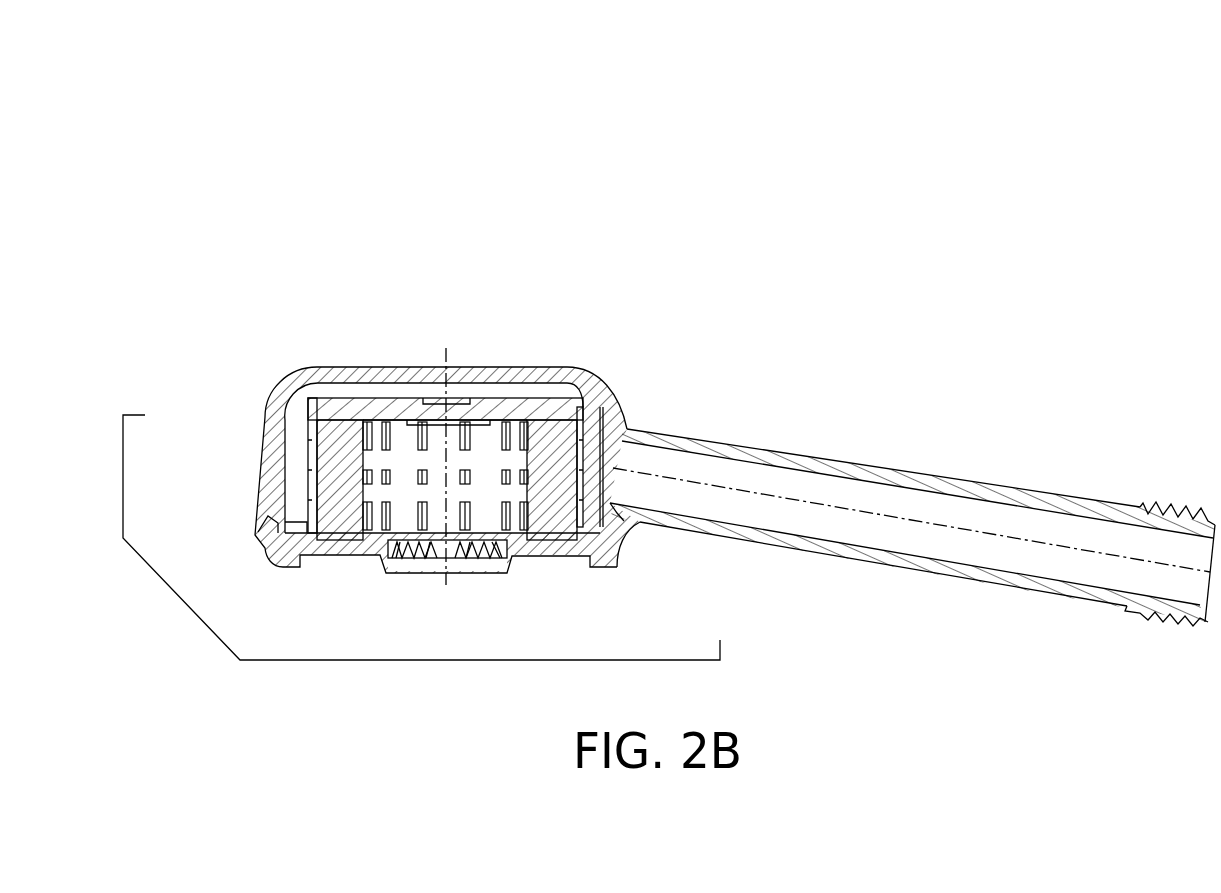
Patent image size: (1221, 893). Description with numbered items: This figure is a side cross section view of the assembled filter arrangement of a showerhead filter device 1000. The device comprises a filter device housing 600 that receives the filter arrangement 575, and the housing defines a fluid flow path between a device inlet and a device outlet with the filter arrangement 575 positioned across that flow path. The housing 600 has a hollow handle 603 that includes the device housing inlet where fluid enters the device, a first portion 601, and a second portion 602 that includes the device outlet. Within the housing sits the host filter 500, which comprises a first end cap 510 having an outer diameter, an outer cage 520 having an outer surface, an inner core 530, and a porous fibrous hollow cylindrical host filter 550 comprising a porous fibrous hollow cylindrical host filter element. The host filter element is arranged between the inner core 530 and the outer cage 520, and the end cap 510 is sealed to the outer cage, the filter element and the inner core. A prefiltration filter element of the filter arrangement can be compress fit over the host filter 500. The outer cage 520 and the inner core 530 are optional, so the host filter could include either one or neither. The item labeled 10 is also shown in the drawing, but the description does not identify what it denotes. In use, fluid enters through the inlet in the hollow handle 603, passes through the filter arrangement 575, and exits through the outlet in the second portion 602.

The showerhead filter device 1000 is at (245, 222).
The filter arrangement 575 is at (541, 256).
The host filter 500 is at (471, 378).
The first end cap 510 is at (548, 398).
The outer cage 520 is at (580, 427).
The inner core 530 is at (405, 430).
The porous fibrous hollow cylindrical host filter 550 is at (327, 442).
The neck / handle 10 is at (612, 462).
The filter device housing 600 is at (172, 595).
The first portion 601 is at (277, 437).
The second portion 602 is at (550, 553).
The hollow handle 603 is at (666, 518).